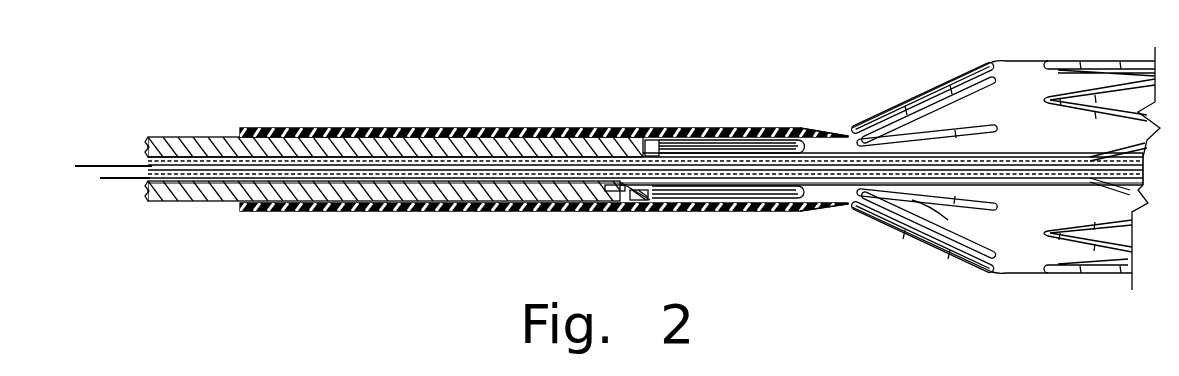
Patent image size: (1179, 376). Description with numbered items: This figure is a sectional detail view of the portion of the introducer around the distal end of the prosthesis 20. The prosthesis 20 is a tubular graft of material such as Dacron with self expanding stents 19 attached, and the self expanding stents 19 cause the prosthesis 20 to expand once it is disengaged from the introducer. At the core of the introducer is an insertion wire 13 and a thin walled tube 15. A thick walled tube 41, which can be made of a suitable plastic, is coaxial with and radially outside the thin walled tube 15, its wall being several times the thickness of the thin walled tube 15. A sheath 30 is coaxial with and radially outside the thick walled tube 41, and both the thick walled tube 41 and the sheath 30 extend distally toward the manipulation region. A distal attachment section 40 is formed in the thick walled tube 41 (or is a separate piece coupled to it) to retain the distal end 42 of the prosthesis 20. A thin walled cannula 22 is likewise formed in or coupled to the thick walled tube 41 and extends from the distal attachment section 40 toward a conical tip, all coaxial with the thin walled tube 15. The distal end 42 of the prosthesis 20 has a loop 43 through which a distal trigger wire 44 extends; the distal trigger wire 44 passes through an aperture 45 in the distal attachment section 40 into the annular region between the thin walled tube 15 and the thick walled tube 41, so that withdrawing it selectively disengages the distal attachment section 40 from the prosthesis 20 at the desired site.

The insertion wire 13 is at (103, 163).
The thin walled tube 15 is at (183, 160).
The self expanding stents 19 is at (1115, 62).
The prosthesis 20 is at (1015, 92).
The thin walled cannula 22 is at (847, 137).
The sheath 30 is at (707, 138).
The distal attachment section 40 is at (545, 142).
The thick walled tube 41 is at (178, 193).
The distal end of the prosthesis 42 is at (683, 203).
The loop 43 is at (643, 202).
The distal trigger wire 44 is at (480, 185).
The aperture 45 is at (637, 202).